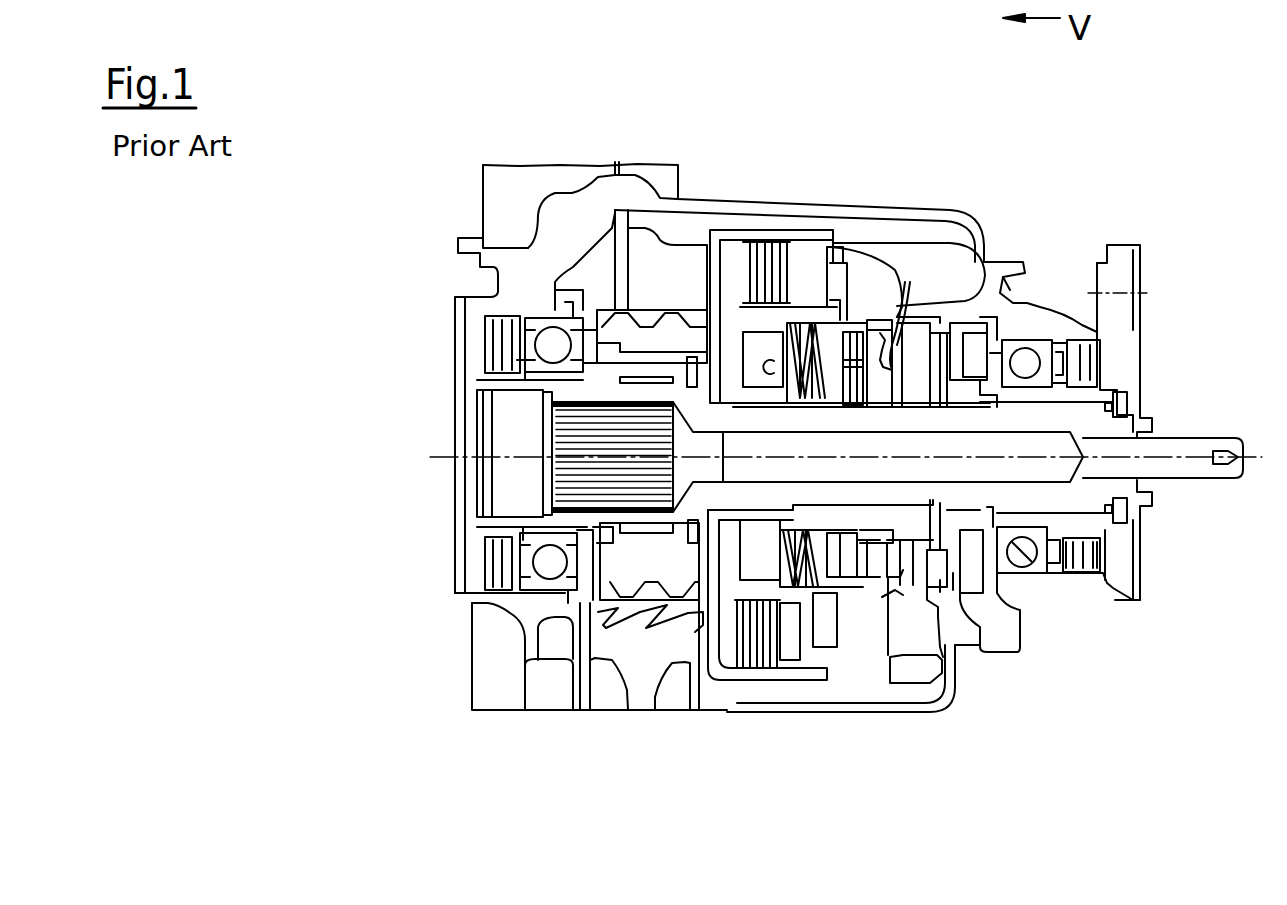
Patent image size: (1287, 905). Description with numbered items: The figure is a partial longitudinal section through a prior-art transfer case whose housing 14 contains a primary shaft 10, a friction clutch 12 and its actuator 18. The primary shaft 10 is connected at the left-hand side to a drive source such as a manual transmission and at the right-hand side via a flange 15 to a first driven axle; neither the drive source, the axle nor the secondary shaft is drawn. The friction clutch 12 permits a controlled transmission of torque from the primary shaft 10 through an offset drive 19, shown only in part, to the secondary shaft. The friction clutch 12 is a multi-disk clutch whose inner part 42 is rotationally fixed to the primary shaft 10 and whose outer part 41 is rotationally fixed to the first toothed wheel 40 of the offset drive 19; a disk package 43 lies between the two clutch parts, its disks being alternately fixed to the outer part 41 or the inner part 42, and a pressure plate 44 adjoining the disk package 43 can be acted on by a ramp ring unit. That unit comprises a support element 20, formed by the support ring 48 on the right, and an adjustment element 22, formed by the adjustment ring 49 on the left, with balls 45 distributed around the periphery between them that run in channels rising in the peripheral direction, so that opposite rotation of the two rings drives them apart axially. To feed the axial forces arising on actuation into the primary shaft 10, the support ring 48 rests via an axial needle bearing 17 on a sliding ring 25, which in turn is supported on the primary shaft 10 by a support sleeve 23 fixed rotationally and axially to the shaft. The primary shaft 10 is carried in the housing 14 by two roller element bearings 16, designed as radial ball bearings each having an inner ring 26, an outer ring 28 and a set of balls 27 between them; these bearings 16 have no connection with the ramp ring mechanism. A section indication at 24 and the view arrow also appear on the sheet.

The primary shaft 10 is at (1133, 457).
The friction clutch 12 is at (781, 168).
The housing 14 is at (862, 205).
The flange 15 is at (1133, 348).
The roller element bearings 16 is at (536, 283).
The axial needle bearing 17 is at (885, 580).
The actuator 18 is at (884, 281).
The offset drive 19 is at (406, 645).
The support element 20 is at (952, 618).
The adjustment element 22 is at (892, 575).
The support sleeve 23 is at (955, 345).
The lower housing cover 24 is at (918, 732).
The sliding ring 25 is at (1005, 612).
The inner ring 26 is at (1083, 577).
The balls 27 is at (1027, 552).
The outer ring 28 is at (1010, 570).
The first toothed wheel 40 is at (626, 342).
The outer part 41 is at (740, 236).
The inner part 42 is at (727, 638).
The disk package 43 is at (765, 648).
The pressure plate 44 is at (855, 615).
The balls 45 is at (907, 280).
The support ring 48 is at (913, 582).
The adjustment ring 49 is at (822, 625).